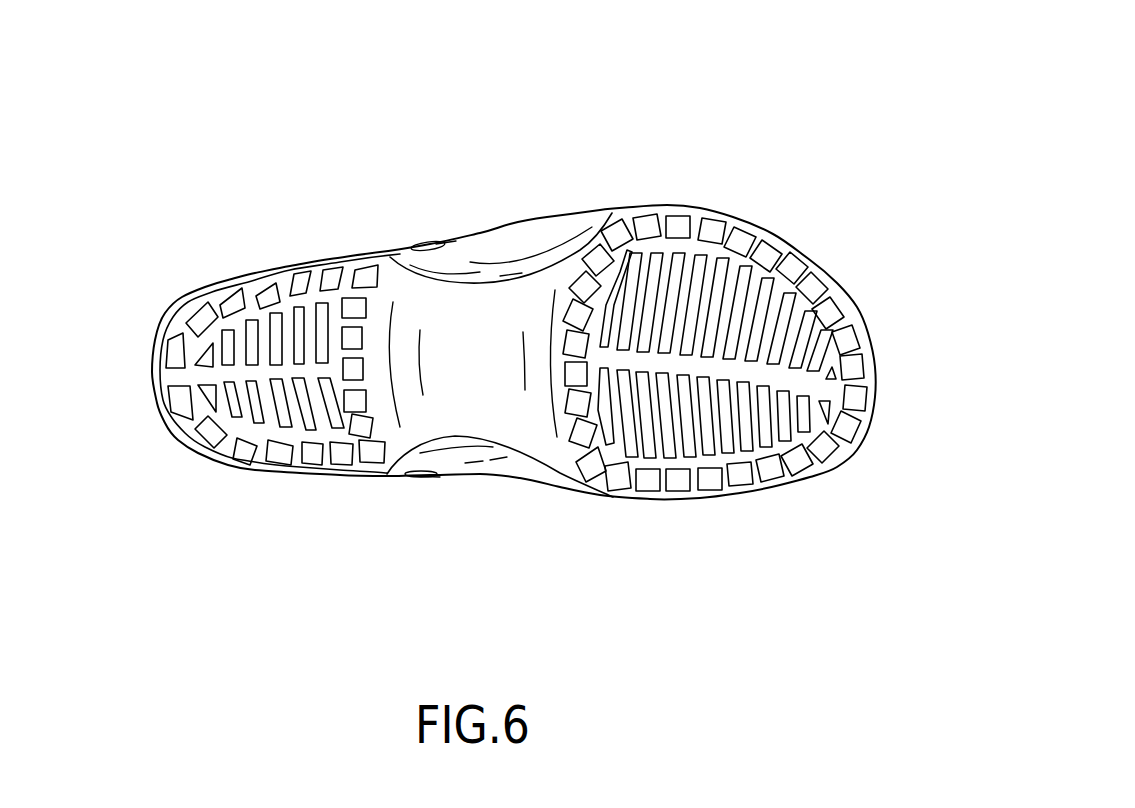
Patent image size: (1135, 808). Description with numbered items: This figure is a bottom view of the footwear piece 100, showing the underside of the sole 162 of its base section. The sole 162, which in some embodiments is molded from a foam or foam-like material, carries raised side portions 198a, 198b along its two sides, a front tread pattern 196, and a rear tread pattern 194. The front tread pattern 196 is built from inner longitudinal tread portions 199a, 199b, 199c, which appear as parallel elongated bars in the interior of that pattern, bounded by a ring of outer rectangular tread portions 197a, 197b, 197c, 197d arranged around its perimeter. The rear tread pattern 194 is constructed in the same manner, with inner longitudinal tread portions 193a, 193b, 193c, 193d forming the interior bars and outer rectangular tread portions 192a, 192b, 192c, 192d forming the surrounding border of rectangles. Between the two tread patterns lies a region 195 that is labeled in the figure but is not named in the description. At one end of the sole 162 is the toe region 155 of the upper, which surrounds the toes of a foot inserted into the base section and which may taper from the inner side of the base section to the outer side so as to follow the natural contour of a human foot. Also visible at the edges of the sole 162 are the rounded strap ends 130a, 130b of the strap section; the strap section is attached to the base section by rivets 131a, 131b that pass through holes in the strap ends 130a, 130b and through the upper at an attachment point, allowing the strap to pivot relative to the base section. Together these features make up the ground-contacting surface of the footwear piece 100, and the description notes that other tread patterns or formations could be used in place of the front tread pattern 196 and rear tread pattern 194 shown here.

The footwear piece 100 is at (702, 93).
The rounded strap end 130a is at (407, 476).
The rounded strap end 130b is at (430, 242).
The rivet 131a is at (423, 478).
The rivet 131b is at (447, 242).
The toe region 155 is at (878, 381).
The sole 162 is at (314, 477).
The outer rectangular tread portion 192a is at (302, 280).
The outer rectangular tread portion 192b is at (345, 270).
The outer rectangular tread portion 192c is at (268, 287).
The outer rectangular tread portion 192d is at (370, 277).
The inner longitudinal tread portion 193a is at (207, 358).
The inner longitudinal tread portion 193b is at (178, 379).
The inner longitudinal tread portion 193c is at (252, 330).
The inner longitudinal tread portion 193d is at (258, 415).
The rear tread pattern 194 is at (217, 415).
The arch region 195 is at (492, 377).
The front tread pattern 196 is at (836, 311).
The outer rectangular tread portion 197a is at (847, 340).
The outer rectangular tread portion 197b is at (878, 340).
The outer rectangular tread portion 197c is at (590, 468).
The outer rectangular tread portion 197d is at (617, 483).
The raised side portion 198a is at (507, 463).
The raised side portion 198b is at (528, 233).
The inner longitudinal tread portion 199a is at (708, 266).
The inner longitudinal tread portion 199b is at (733, 270).
The inner longitudinal tread portion 199c is at (683, 260).